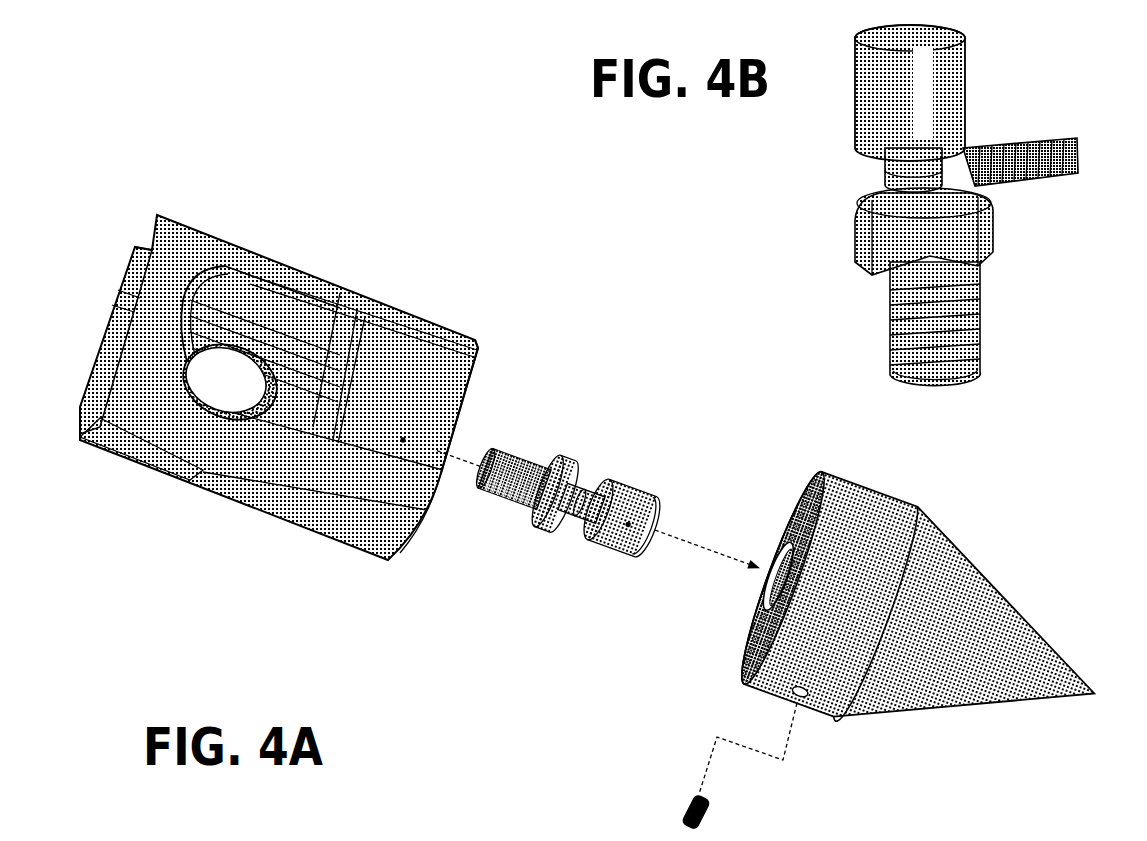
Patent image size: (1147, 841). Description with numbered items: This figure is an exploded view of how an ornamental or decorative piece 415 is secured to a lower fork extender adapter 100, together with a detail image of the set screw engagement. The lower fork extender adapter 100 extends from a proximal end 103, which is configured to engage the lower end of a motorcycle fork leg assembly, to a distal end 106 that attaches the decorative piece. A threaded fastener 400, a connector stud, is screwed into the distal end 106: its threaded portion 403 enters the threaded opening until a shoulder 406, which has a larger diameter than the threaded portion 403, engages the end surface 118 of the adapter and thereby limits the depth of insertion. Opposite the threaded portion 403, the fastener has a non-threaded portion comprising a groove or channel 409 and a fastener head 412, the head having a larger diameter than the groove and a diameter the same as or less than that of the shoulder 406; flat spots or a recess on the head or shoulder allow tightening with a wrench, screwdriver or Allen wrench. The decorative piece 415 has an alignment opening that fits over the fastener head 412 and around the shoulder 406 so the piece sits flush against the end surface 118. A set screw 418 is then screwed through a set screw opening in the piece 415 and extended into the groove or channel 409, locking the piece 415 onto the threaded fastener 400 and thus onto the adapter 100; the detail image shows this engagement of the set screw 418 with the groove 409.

In FIG. 4A, the lower fork extender adapter 100 is at (332, 397).
In FIG. 4A, the proximal end 103 is at (150, 205).
In FIG. 4A, the distal end 106 is at (380, 582).
In FIG. 4A, the end surface 118 is at (482, 365).
In FIG. 4A, the threaded fastener 400 is at (598, 491).
In FIG. 4B, the threaded portion 403 is at (883, 378).
In FIG. 4B, the shoulder 406 is at (853, 273).
In FIG. 4B, the groove or channel 409 is at (853, 178).
In FIG. 4B, the fastener head 412 is at (838, 112).
In FIG. 4A, the attachment or ornamental or decorative piece 415 is at (907, 617).
In FIG. 4A, the set screw 418 is at (688, 768).
In FIG. 4B, the set screw 418 is at (1012, 108).